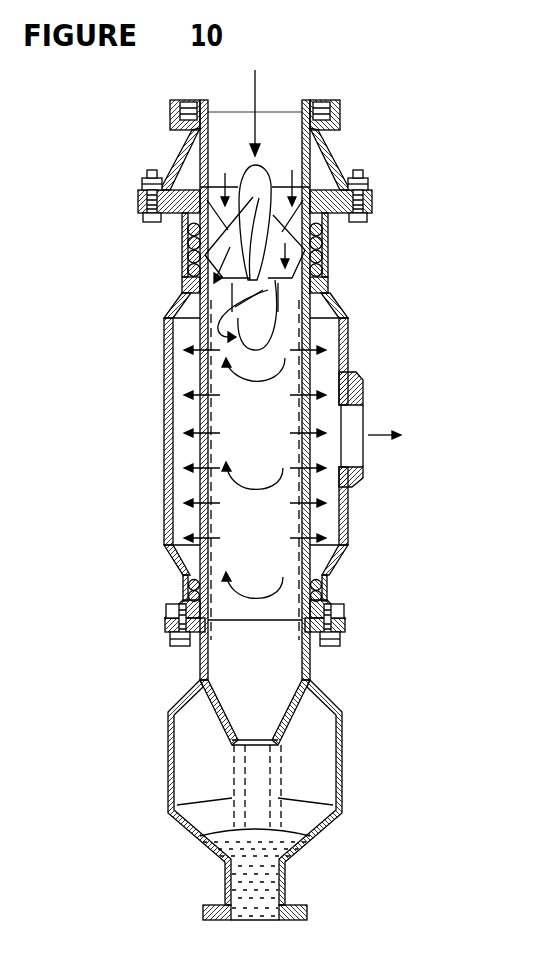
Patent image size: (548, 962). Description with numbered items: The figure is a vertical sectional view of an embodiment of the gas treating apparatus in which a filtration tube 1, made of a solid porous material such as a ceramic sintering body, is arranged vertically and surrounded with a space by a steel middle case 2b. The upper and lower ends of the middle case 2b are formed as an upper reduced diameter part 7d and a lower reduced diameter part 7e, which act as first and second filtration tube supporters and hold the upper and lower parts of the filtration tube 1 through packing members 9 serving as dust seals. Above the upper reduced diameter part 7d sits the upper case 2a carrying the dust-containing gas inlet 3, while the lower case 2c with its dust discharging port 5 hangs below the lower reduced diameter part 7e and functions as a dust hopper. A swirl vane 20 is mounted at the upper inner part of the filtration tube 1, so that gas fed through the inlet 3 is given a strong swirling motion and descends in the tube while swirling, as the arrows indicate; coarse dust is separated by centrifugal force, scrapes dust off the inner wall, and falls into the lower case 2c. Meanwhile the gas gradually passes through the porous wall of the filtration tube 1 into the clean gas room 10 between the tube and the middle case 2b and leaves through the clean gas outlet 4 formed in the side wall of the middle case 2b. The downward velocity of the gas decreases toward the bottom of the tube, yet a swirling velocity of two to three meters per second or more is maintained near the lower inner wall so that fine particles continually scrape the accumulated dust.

The filtration tube 1 is at (310, 365).
The upper case 2a is at (332, 157).
The middle case 2b is at (348, 372).
The lower case 2c is at (310, 662).
The dust-containing gas inlet 3 is at (287, 102).
The clean gas outlet 4 is at (363, 423).
The dust discharging port 5 is at (283, 885).
The upper reduced diameter part 7d is at (330, 292).
The lower reduced diameter part 7e is at (327, 582).
The packing members 9 is at (325, 280).
The clean gas room 10 is at (330, 518).
The swirl vane 20 is at (327, 248).